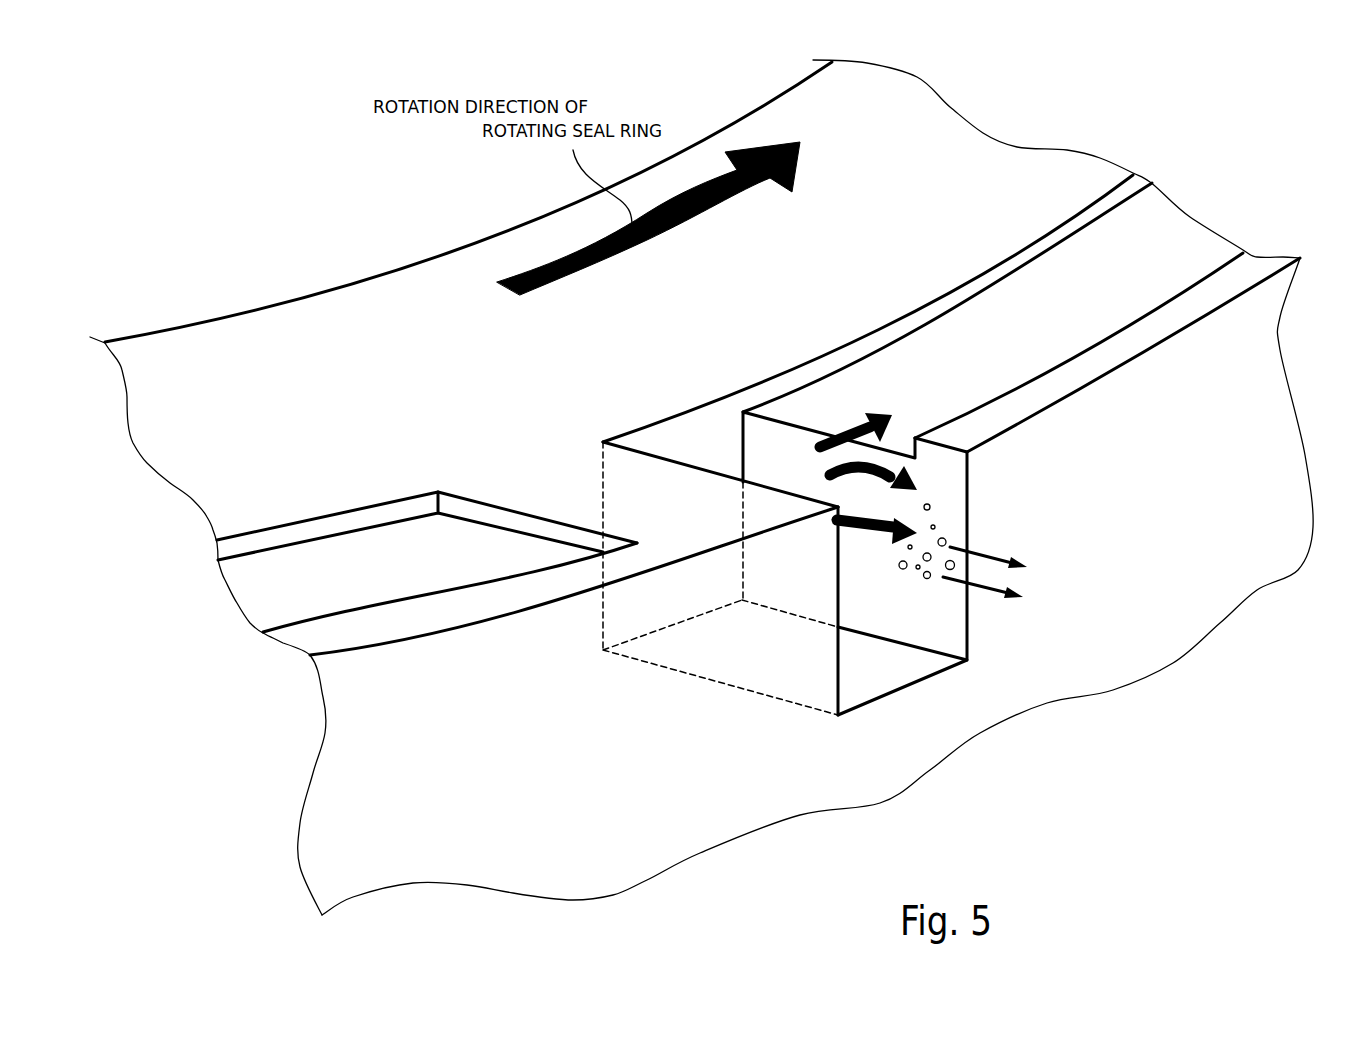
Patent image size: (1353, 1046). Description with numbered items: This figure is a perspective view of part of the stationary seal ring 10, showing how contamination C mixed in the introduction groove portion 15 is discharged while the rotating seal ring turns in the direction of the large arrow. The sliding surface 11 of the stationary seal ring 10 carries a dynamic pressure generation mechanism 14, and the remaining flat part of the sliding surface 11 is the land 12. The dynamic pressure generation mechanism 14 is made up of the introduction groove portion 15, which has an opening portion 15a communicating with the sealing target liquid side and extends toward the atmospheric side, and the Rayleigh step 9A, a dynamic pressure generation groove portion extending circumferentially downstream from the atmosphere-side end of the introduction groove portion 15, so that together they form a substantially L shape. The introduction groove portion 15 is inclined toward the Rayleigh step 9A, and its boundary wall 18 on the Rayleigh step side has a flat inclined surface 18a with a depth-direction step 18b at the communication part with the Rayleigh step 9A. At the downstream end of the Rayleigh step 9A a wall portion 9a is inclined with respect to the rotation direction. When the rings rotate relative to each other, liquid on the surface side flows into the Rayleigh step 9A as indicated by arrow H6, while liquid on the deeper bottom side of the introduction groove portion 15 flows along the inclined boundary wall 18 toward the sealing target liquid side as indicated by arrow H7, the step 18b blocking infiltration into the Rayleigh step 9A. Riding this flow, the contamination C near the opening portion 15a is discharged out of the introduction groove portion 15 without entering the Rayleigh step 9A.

The stationary seal ring 10 is at (402, 237).
The sliding surface 11 is at (298, 340).
The land 12 is at (218, 357).
The dynamic pressure generation mechanism 14 is at (797, 270).
The introduction groove portion 15 is at (712, 447).
The opening portion 15a is at (863, 675).
The wall portion 9a is at (515, 527).
The Rayleigh step 9A is at (912, 375).
The boundary wall 18 is at (1107, 458).
The inclined surface 18a is at (930, 602).
The depth-direction step 18b is at (875, 588).
The arrow H6 is at (862, 448).
The arrow H7 is at (857, 473).
The contamination C is at (943, 542).